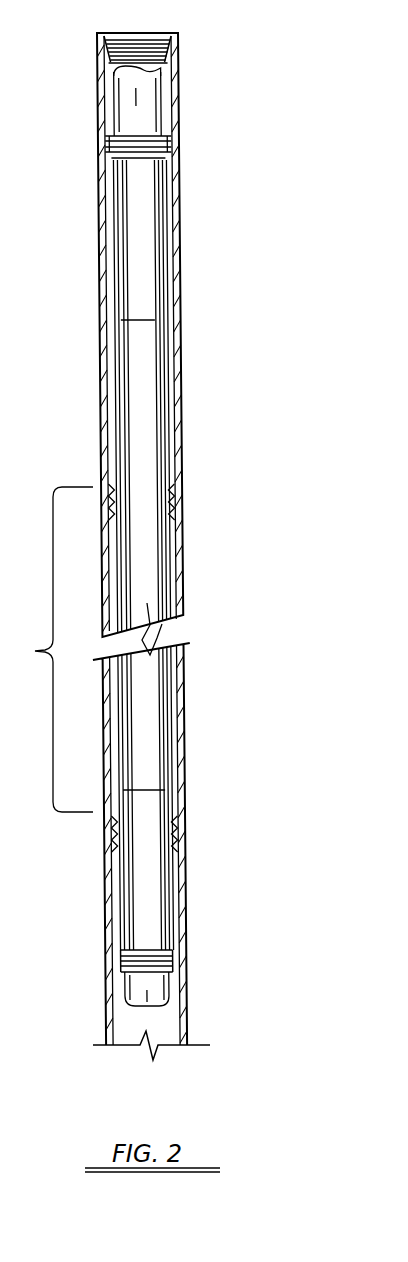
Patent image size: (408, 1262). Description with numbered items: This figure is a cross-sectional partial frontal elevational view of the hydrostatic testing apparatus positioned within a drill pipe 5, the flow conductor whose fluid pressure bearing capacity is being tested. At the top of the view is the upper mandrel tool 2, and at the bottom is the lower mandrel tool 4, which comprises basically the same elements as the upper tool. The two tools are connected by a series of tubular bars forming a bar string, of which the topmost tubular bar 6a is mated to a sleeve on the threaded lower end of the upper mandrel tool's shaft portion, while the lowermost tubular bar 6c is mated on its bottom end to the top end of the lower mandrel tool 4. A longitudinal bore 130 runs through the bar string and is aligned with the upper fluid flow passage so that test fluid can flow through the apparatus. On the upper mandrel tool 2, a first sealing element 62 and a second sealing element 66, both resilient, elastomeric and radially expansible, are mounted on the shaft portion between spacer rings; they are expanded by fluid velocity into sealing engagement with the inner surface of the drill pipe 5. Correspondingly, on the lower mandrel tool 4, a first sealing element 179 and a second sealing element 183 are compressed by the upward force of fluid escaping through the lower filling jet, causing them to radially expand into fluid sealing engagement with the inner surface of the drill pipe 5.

The upper mandrel tool 2 is at (143, 247).
The lower mandrel tool 4 is at (148, 912).
The drill pipe 5 is at (110, 372).
The topmost tubular bar 6a is at (142, 410).
The lowermost tubular bar 6c is at (148, 720).
The first sealing element 62 is at (178, 112).
The second sealing element 66 is at (176, 140).
The longitudinal bore 130 is at (160, 638).
The first sealing element 179 is at (187, 932).
The second sealing element 183 is at (187, 953).